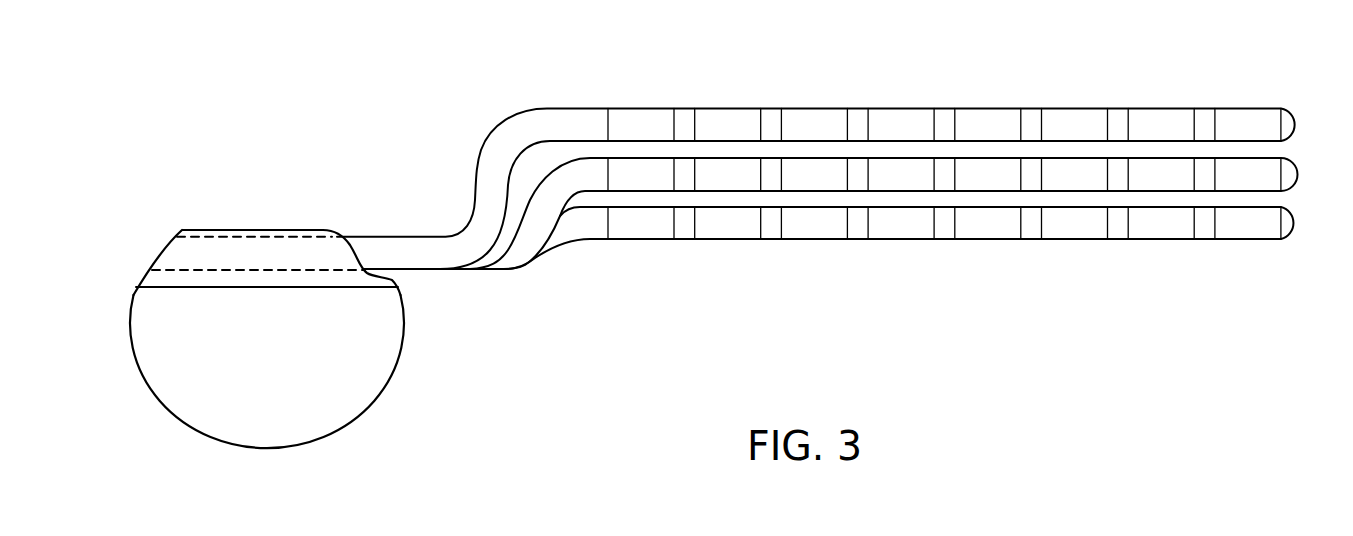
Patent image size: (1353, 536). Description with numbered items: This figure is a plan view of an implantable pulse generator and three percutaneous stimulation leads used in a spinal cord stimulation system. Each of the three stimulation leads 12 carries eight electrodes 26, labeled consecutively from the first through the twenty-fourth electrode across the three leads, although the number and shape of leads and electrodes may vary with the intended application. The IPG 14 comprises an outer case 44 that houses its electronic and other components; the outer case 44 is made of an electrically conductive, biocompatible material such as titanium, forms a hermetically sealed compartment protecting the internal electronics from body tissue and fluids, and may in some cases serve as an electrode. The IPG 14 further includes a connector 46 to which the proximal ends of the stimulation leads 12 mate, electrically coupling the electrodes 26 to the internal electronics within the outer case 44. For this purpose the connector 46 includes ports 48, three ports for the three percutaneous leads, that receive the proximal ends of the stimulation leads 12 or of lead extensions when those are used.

The stimulation leads 12 is at (817, 152).
The implantable pulse generator 14 is at (274, 299).
The electrodes 26 is at (812, 108).
The outer case 44 is at (393, 340).
The connector 46 is at (207, 230).
The ports 48 is at (277, 248).